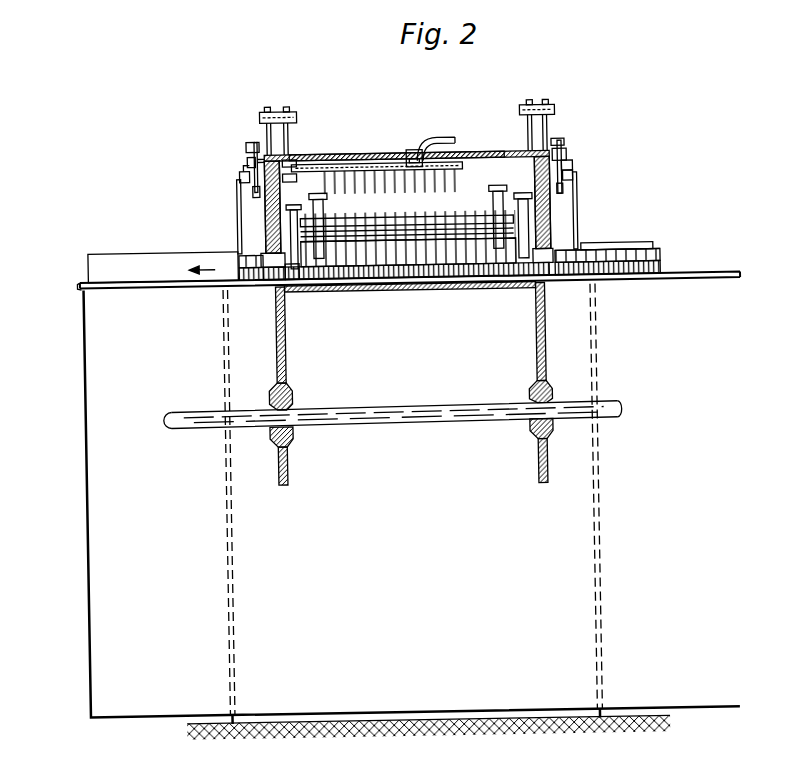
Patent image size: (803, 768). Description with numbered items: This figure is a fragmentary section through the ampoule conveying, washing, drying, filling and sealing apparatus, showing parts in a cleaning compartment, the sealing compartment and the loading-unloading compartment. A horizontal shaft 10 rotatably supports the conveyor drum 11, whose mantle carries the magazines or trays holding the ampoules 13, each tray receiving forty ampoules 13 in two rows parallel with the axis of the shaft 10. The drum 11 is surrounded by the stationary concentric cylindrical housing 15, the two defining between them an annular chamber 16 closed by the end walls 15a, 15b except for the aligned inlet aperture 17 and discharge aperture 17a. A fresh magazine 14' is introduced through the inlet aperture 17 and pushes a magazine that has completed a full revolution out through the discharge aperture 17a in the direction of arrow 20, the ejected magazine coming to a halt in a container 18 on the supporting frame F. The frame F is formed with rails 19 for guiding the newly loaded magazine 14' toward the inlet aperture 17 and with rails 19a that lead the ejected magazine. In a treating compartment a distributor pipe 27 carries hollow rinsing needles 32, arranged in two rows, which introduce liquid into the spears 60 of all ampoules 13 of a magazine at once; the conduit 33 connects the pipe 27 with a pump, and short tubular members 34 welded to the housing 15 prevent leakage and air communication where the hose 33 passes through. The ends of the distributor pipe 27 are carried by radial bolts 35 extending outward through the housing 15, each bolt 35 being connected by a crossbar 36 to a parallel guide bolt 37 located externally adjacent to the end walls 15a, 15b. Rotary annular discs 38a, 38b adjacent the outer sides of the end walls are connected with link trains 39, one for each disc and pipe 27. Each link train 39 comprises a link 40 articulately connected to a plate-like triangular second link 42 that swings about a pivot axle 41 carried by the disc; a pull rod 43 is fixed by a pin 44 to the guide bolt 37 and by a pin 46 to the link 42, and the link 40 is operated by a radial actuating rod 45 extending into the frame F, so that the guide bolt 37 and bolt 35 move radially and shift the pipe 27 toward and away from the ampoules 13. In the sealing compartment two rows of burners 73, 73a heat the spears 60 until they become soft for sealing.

The horizontal shaft 10 is at (421, 405).
The drum 11 is at (282, 348).
The ampoules 13 is at (546, 288).
The fresh magazine 14' is at (609, 238).
The cylindrical housing 15 is at (496, 160).
The end wall 15a is at (550, 225).
The end wall 15b is at (261, 250).
The annular chamber 16 is at (471, 156).
The inlet aperture 17 is at (544, 248).
The discharge aperture 17a is at (267, 277).
The container 18 is at (112, 245).
The rails 19 is at (699, 277).
The rails 19a is at (80, 277).
The arrow 20 is at (204, 269).
The distributor pipe 27 is at (341, 164).
The rinsing needles 32 is at (415, 180).
The conduit 33 is at (416, 153).
The tubular members 34 is at (428, 142).
The radial bolts 35 is at (293, 130).
The crossbar 36 is at (285, 108).
The guide bolt 37 is at (263, 113).
The rotary annular disc 38a is at (550, 213).
The rotary annular disc 38b is at (264, 230).
The link train 39 is at (182, 160).
The link 40 is at (240, 173).
The pivot axle 41 is at (248, 159).
The plate-like triangular second link 42 is at (248, 149).
The pull rod 43 is at (253, 187).
The pin 44 is at (238, 212).
The radial actuating rod 45 is at (575, 198).
The pin 46 is at (249, 140).
The spears 60 is at (411, 280).
The burner 73 is at (296, 283).
The burner 73a is at (313, 289).
The supporting frame F is at (76, 564).